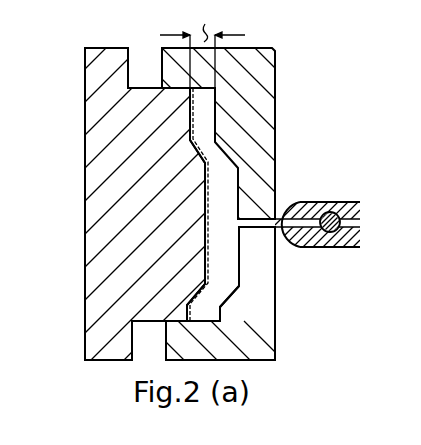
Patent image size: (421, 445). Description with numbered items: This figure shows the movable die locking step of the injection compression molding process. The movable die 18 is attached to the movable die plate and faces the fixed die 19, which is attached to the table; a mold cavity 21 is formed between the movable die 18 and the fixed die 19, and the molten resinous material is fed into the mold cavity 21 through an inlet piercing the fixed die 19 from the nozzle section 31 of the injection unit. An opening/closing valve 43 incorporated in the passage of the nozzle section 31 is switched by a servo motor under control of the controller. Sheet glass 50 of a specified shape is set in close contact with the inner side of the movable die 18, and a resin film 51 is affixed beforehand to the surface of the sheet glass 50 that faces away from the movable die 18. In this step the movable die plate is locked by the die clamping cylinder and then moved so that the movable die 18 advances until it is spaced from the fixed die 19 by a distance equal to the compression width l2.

The movable die 18 is at (100, 133).
The fixed die 19 is at (258, 125).
The mold cavity 21 is at (203, 105).
The nozzle section 31 is at (337, 203).
The opening/closing valve 43 is at (336, 241).
The sheet glass 50 is at (203, 276).
The resin film 51 is at (222, 302).
The compression width l2 is at (202, 46).